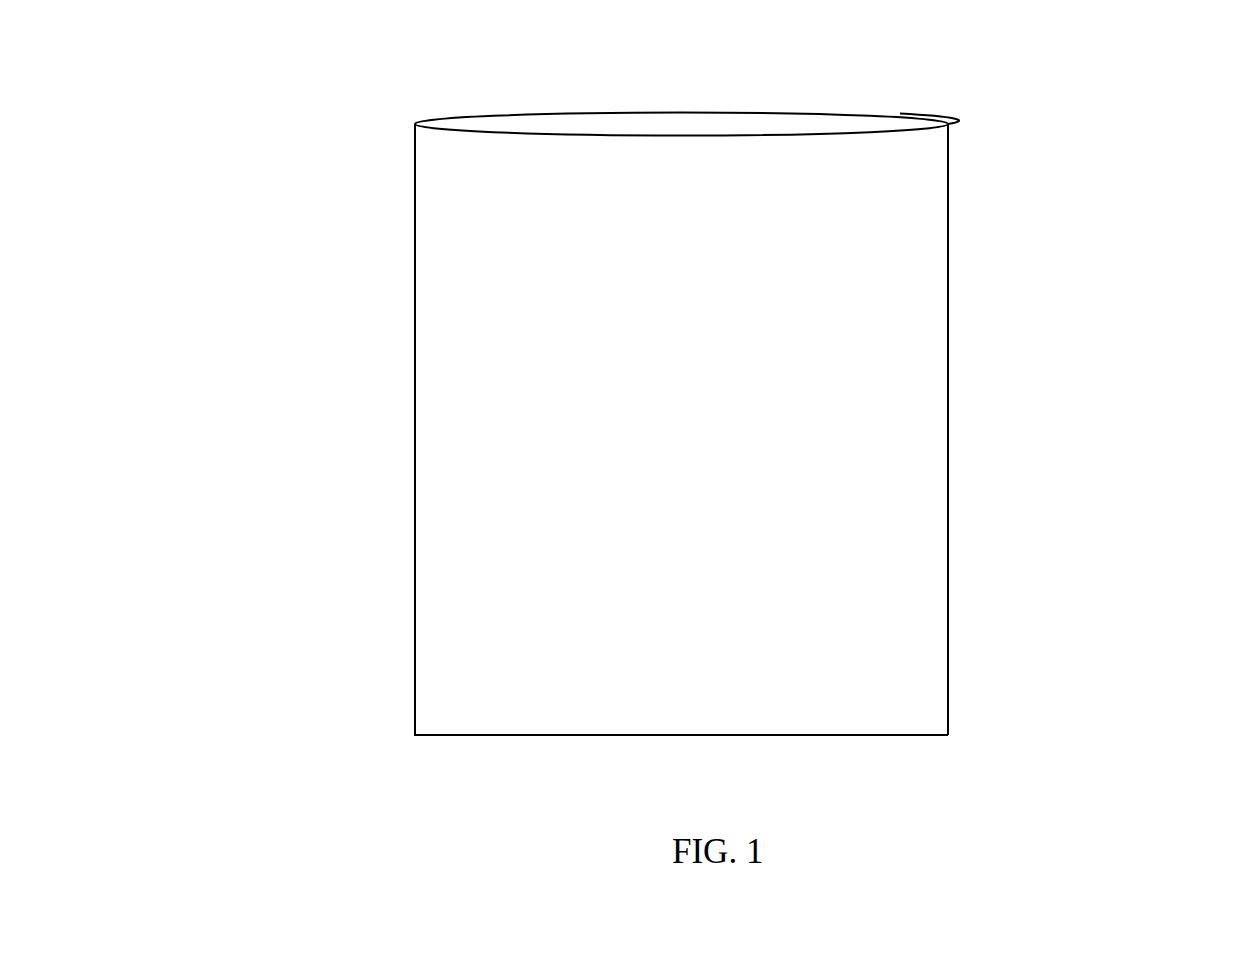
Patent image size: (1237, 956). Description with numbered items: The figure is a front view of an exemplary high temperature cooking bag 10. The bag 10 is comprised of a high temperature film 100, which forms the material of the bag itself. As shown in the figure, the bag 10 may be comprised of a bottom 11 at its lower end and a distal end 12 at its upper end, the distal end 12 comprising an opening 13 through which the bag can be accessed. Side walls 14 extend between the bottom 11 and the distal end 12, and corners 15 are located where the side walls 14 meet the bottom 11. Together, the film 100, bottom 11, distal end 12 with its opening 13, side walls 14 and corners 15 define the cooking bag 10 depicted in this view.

The high temperature bag 10 is at (336, 135).
The bottom 11 is at (842, 735).
The distal end 12 is at (927, 113).
The opening 13 is at (731, 126).
The side walls 14 is at (953, 393).
The corners 15 is at (950, 735).
The high temperature film 100 is at (513, 467).